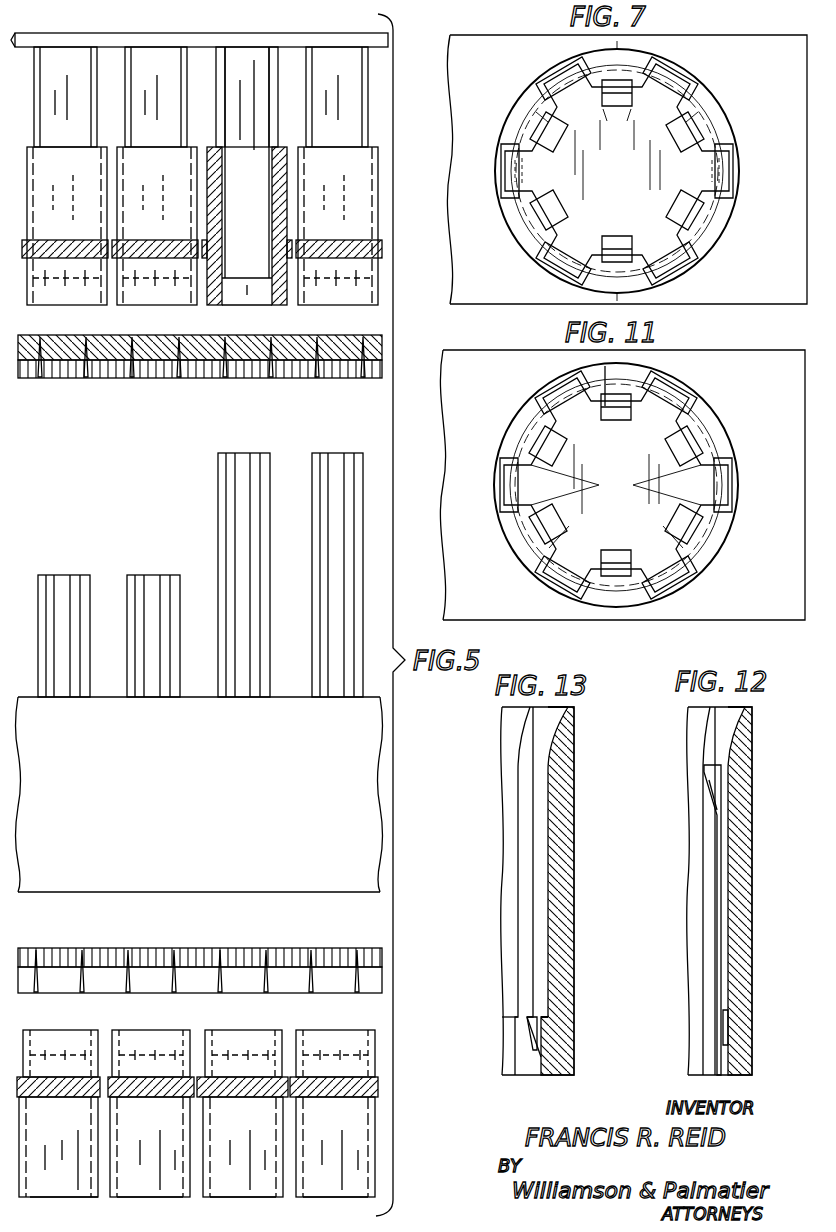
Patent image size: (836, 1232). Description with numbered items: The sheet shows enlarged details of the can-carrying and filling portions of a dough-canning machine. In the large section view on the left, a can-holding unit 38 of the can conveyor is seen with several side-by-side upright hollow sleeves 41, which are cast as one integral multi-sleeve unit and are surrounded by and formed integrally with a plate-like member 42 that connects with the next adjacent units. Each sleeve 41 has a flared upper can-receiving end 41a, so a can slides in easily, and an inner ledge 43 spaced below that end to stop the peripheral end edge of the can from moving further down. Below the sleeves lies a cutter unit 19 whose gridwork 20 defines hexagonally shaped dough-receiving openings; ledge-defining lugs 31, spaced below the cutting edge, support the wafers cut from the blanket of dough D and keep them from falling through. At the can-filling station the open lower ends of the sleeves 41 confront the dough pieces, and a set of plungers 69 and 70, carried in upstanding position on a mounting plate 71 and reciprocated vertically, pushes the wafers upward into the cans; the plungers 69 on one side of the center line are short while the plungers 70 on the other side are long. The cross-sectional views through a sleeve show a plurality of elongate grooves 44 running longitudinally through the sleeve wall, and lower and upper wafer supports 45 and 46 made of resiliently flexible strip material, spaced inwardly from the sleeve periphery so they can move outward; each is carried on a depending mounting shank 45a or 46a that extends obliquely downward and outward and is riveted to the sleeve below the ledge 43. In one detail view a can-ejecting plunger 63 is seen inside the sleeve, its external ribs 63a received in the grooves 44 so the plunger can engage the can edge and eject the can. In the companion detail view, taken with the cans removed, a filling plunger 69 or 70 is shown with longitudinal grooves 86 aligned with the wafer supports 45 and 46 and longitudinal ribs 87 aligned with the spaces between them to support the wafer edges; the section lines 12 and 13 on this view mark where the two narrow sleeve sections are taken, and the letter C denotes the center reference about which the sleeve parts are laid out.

In FIG. 11, the section line 12— 12 is at (620, 406).
In FIG. 11, the section line 13— 13 is at (705, 447).
In FIG. 5, the cutter unit 19 is at (214, 376).
In FIG. 5, the gridwork 20 is at (192, 337).
In FIG. 5, the ledge-defining lug 31 is at (100, 378).
In FIG. 11, the can-holding unit 38 is at (507, 353).
In FIG. 5, the sleeve 41 is at (72, 181).
In FIG. 7, the sleeve 41 is at (739, 187).
In FIG. 11, the sleeve 41 is at (635, 485).
In FIG. 13, the sleeve 41 is at (560, 896).
In FIG. 12, the sleeve 41 is at (734, 896).
In FIG. 5, the can-receiving end 41a is at (310, 150).
In FIG. 7, the can-receiving end 41a is at (713, 118).
In FIG. 13, the can-receiving end 41a is at (562, 708).
In FIG. 12, the can-receiving end 41a is at (736, 728).
In FIG. 5, the plate-like member 42 is at (78, 242).
In FIG. 7, the plate-like member 42 is at (767, 73).
In FIG. 11, the plate-like member 42 is at (763, 590).
In FIG. 7, the ledge 43 is at (532, 116).
In FIG. 11, the ledge 43 is at (592, 500).
In FIG. 13, the ledge 43 is at (544, 1018).
In FIG. 12, the ledge 43 is at (727, 1011).
In FIG. 7, the groove 44 is at (653, 72).
In FIG. 11, the groove 44 is at (599, 485).
In FIG. 7, the lower wafer support 45 is at (664, 141).
In FIG. 11, the lower wafer support 45 is at (616, 501).
In FIG. 13, the lower wafer support 45 is at (530, 1016).
In FIG. 13, the mounting shank 45a is at (524, 1044).
In FIG. 7, the upper wafer support 46 is at (608, 104).
In FIG. 11, the upper wafer support 46 is at (601, 456).
In FIG. 12, the upper wafer support 46 is at (704, 765).
In FIG. 12, the mounting shank 46a is at (710, 795).
In FIG. 7, the can-ejecting plunger 63 is at (640, 172).
In FIG. 7, the rib 63a is at (702, 174).
In FIG. 5, the short plunger 69 is at (146, 580).
In FIG. 5, the long plunger 70 is at (328, 458).
In FIG. 11, the long plunger 70 is at (488, 488).
In FIG. 5, the mounting plate 71 is at (181, 796).
In FIG. 11, the groove 86 is at (616, 485).
In FIG. 11, the rib 87 is at (616, 538).
In FIG. 7, the center line C is at (535, 75).
In FIG. 11, the center line C is at (732, 486).
In FIG. 5, the dough D is at (52, 339).